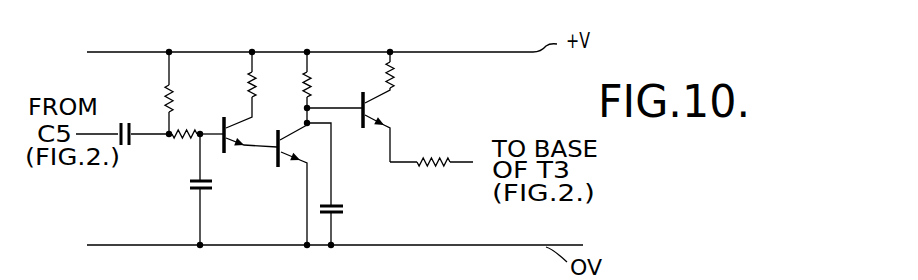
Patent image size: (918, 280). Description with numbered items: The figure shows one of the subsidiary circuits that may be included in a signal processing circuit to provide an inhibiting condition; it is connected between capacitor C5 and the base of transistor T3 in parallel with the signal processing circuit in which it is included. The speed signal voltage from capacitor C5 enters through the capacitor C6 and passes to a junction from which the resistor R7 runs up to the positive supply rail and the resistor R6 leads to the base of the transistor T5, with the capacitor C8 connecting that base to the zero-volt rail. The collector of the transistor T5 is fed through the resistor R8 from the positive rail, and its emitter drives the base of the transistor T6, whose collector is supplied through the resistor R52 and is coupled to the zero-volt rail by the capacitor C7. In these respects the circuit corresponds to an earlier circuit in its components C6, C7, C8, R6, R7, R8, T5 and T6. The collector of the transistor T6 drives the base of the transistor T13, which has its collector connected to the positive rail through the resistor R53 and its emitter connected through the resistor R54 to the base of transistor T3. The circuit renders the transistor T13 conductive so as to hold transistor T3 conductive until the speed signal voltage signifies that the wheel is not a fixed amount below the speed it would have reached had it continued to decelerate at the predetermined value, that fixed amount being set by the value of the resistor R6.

The capacitor C6 is at (141, 122).
The resistor R7 is at (188, 93).
The resistor R6 is at (178, 141).
The capacitor C8 is at (222, 189).
The transistor T5 is at (246, 125).
The resistor R8 is at (270, 74).
The collector resistor R52 is at (328, 87).
The transistor T6 is at (292, 146).
The capacitor C7 is at (348, 184).
The transistor T13 is at (373, 111).
The collector resistor R53 is at (413, 72).
The output resistor R54 is at (431, 151).